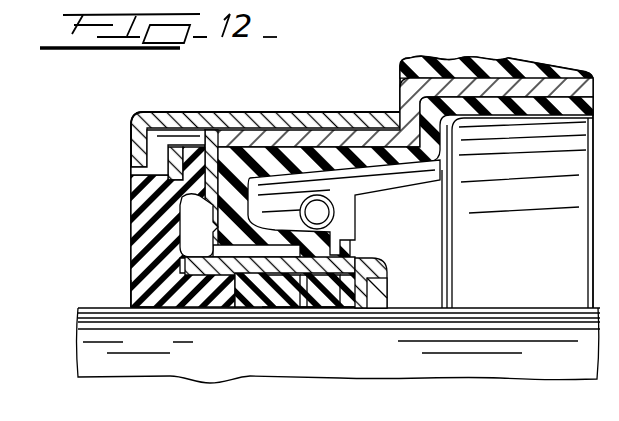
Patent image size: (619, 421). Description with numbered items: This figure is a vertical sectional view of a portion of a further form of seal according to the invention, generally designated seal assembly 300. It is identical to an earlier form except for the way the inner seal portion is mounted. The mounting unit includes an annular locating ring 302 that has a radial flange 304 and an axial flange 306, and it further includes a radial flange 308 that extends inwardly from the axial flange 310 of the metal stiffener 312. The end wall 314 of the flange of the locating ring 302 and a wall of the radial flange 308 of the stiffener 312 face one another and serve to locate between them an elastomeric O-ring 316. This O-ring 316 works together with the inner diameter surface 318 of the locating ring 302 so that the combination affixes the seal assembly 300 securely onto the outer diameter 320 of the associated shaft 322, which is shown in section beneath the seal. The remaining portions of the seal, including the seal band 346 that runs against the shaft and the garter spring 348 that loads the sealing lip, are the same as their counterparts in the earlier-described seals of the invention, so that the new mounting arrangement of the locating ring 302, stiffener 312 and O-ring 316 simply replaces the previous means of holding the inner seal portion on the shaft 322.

The seal assembly 300 is at (362, 92).
The annular locating ring 302 is at (112, 284).
The radial flange 304 is at (131, 213).
The axial flange 306 is at (222, 300).
The radial flange 308 is at (380, 293).
The axial flange 310 is at (338, 280).
The metal stiffener 312 is at (186, 290).
The end wall 314 is at (313, 305).
The elastomeric O-ring 316 is at (357, 305).
The inner diameter surface 318 is at (281, 305).
The outer diameter 320 is at (500, 308).
The shaft 322 is at (462, 353).
The seal band 346 is at (307, 268).
The garter spring 348 is at (434, 196).